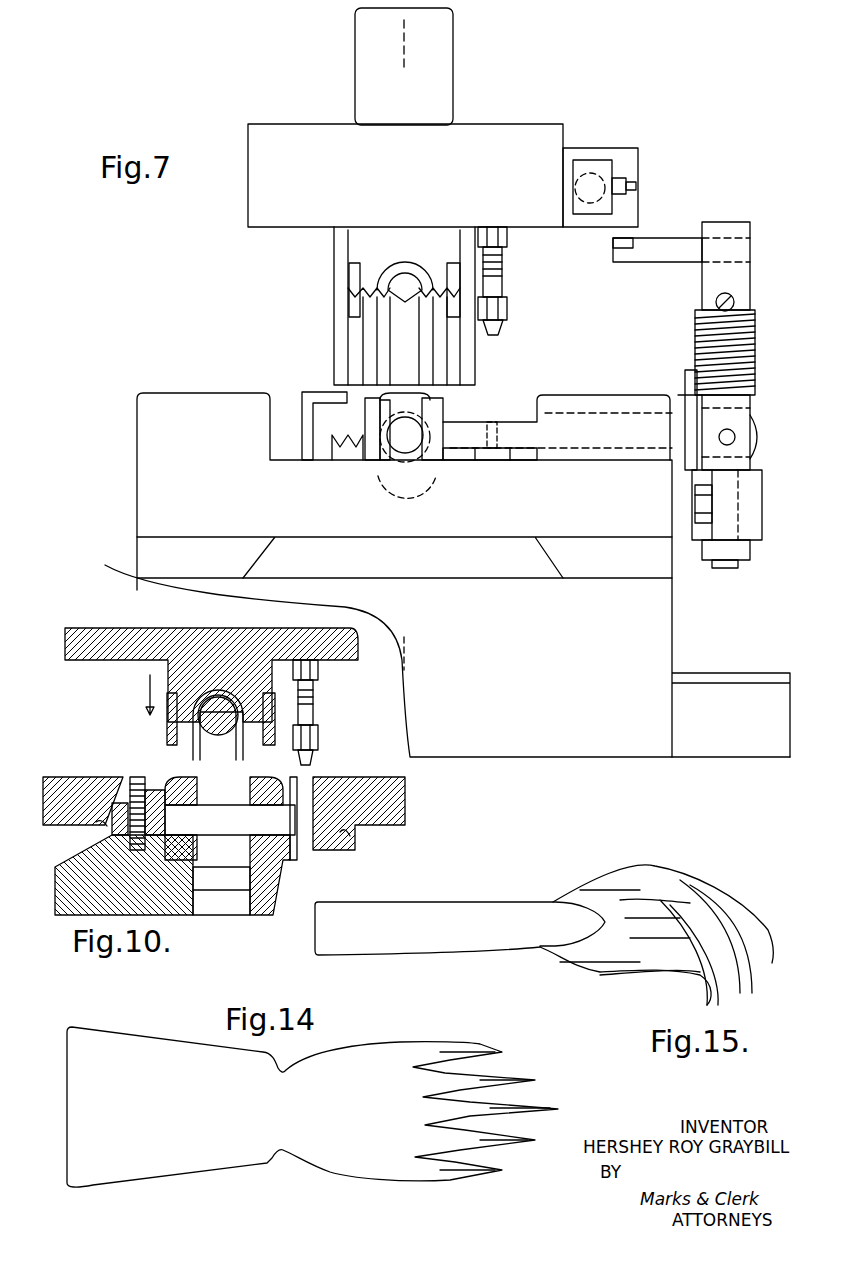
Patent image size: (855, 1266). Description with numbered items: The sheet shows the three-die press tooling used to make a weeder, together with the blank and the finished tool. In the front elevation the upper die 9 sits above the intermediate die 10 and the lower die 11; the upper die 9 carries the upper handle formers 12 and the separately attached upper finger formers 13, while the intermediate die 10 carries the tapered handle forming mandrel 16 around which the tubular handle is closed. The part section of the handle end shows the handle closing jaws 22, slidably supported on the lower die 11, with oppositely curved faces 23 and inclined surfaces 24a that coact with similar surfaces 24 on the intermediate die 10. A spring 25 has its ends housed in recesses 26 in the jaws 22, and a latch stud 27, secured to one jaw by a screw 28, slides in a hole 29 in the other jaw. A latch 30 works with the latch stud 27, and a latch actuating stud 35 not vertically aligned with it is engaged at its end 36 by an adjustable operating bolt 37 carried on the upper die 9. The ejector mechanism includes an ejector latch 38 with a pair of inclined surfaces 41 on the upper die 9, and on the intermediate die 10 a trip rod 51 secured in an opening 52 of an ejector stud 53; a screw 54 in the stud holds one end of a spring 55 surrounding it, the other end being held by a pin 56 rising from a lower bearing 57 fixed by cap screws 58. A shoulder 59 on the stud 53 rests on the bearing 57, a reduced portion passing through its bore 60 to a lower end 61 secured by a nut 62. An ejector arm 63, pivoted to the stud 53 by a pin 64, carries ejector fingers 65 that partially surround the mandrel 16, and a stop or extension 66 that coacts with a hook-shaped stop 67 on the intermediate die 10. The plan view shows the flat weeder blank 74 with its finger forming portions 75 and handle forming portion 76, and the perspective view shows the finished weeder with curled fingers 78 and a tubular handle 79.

In FIG. 7, the upper die 9 is at (522, 143).
In FIG. 7, the intermediate die 10 is at (143, 476).
In FIG. 7, the lower die 11 is at (408, 32).
In FIG. 7, the upper handle formers 12 is at (398, 262).
In FIG. 7, the upper finger formers 13 is at (345, 320).
In FIG. 7, the handle forming mandrel 16 is at (380, 464).
In FIG. 10, the handle forming mandrel 16 is at (222, 730).
In FIG. 10, the handle closing jaws 22 is at (180, 917).
In FIG. 10, the oppositely curved faces 23 is at (180, 790).
In FIG. 10, the inclined surfaces 24 is at (100, 800).
In FIG. 10, the inclined surfaces 24a is at (97, 825).
In FIG. 10, the spring 25 is at (198, 850).
In FIG. 10, the recesses 26 is at (221, 891).
In FIG. 10, the latch stud 27 is at (263, 828).
In FIG. 10, the screw 28 is at (132, 777).
In FIG. 10, the hole 29 is at (278, 840).
In FIG. 10, the latch 30 is at (300, 860).
In FIG. 10, the latch actuating stud 35 is at (316, 765).
In FIG. 7, the end 36 is at (500, 322).
In FIG. 7, the adjustable operating bolt 37 is at (496, 285).
In FIG. 10, the adjustable operating bolt 37 is at (312, 712).
In FIG. 7, the ejector latch 38 is at (590, 165).
In FIG. 7, the inclined surfaces 41 is at (625, 205).
In FIG. 7, the trip rod 51 is at (662, 245).
In FIG. 7, the opening 52 is at (728, 237).
In FIG. 7, the ejector stud 53 is at (740, 282).
In FIG. 7, the screw 54 is at (735, 302).
In FIG. 7, the spring 55 is at (752, 347).
In FIG. 7, the pin 56 is at (683, 378).
In FIG. 7, the lower bearing 57 is at (752, 490).
In FIG. 7, the cap screws 58 is at (700, 506).
In FIG. 7, the shoulder 59 is at (742, 470).
In FIG. 7, the bore 60 is at (742, 518).
In FIG. 7, the lower end 61 is at (728, 568).
In FIG. 7, the nut 62 is at (752, 556).
In FIG. 7, the ejector arm 63 is at (517, 420).
In FIG. 7, the pin 64 is at (735, 437).
In FIG. 7, the ejector fingers 65 is at (388, 478).
In FIG. 7, the stop or extension 66 is at (485, 428).
In FIG. 7, the hook-shaped stop 67 is at (328, 393).
In FIG. 14, the weeder blank 74 is at (265, 1158).
In FIG. 14, the finger forming portions 75 is at (460, 1140).
In FIG. 14, the handle forming portion 76 is at (93, 1180).
In FIG. 15, the fingers 78 is at (730, 960).
In FIG. 15, the handle 79 is at (388, 945).